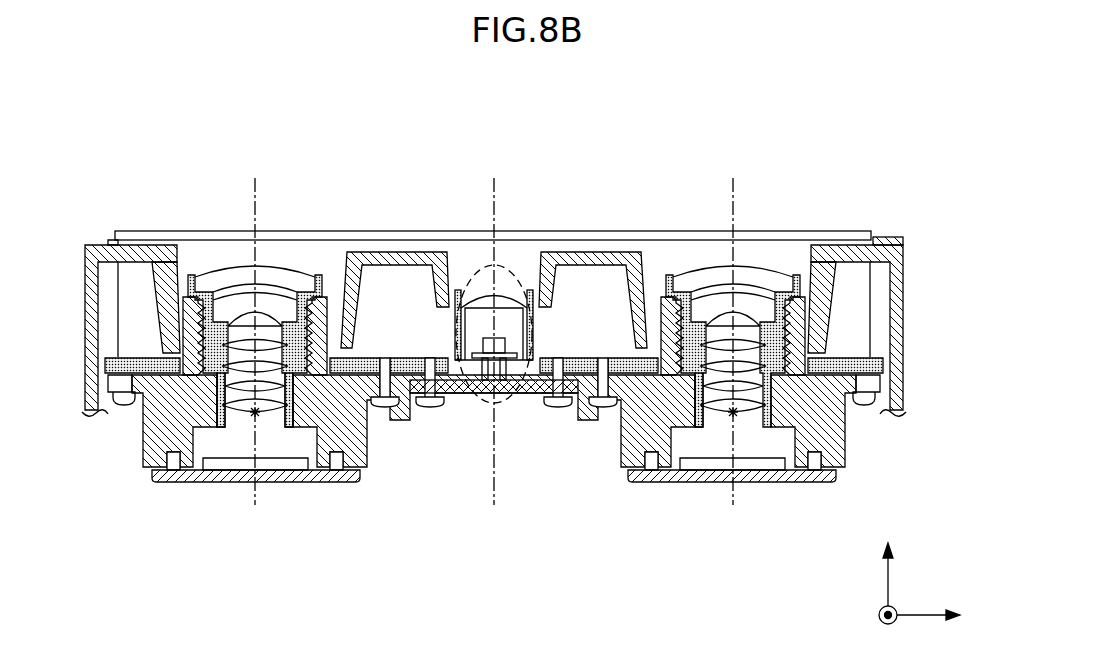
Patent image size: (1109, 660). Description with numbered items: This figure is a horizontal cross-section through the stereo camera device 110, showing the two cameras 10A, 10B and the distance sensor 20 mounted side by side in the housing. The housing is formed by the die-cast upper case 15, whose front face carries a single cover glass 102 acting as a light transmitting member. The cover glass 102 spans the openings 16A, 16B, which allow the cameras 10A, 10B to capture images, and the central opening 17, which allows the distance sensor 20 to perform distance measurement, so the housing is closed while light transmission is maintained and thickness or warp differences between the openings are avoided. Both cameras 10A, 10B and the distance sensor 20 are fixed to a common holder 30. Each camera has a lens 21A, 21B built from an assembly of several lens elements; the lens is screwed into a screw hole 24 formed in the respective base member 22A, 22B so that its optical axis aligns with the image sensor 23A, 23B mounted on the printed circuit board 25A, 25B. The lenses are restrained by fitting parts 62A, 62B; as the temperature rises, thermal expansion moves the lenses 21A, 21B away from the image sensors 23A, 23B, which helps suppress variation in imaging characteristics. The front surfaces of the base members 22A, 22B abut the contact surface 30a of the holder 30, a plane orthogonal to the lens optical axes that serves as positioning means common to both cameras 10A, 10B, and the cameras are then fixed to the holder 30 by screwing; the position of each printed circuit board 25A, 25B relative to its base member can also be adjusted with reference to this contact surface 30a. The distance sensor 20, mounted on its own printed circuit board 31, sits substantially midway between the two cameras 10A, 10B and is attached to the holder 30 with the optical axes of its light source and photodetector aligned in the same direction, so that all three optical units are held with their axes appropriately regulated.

The optical device 110 is at (915, 101).
The camera 10A is at (245, 331).
The camera 10B is at (766, 310).
The upper case 15 is at (904, 296).
The opening 16A is at (172, 276).
The opening 16B is at (811, 276).
The opening 17 is at (520, 263).
The distance sensor 20 is at (510, 404).
The lens 21A is at (240, 303).
The lens 21B is at (748, 303).
The base member 22A is at (150, 440).
The base member 22B is at (838, 442).
The image sensor 23A is at (287, 468).
The image sensor 23B is at (703, 468).
The screw hole 24 is at (298, 303).
The printed circuit board 25A is at (220, 480).
The printed circuit board 25B is at (768, 480).
The holder 30 is at (145, 357).
The contact surface 30a is at (358, 400).
The printed circuit board 31 is at (452, 396).
The fitting part 62A is at (225, 404).
The fitting part 62B is at (292, 404).
The cover glass 102 is at (624, 237).